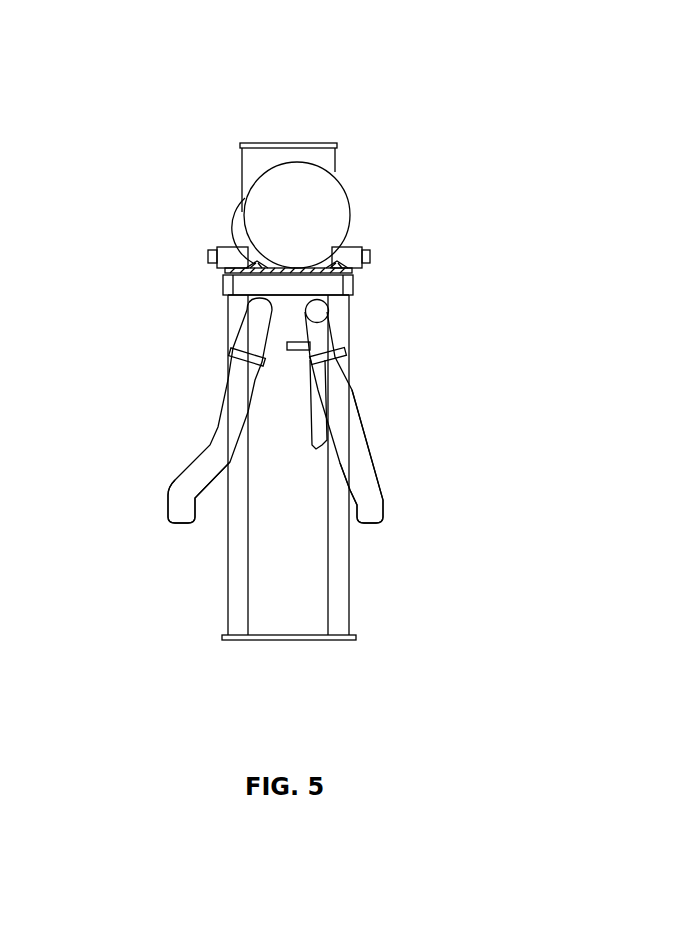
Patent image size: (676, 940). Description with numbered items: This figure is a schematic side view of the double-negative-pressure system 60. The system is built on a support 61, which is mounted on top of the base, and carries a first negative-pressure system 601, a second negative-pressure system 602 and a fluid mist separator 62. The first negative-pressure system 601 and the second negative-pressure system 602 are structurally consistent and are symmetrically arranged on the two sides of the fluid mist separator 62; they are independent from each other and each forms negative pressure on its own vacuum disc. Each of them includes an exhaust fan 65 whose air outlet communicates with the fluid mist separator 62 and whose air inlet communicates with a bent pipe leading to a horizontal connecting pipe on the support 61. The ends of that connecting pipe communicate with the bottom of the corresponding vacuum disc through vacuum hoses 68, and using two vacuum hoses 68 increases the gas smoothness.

The double-negative-pressure system 60 is at (319, 39).
The support 61 is at (288, 642).
The fluid mist separator 62 is at (288, 143).
The exhaust fan 65 is at (233, 222).
The first negative-pressure system 601 is at (212, 364).
The second negative-pressure system 602 is at (360, 363).
The vacuum hose 68 is at (185, 477).